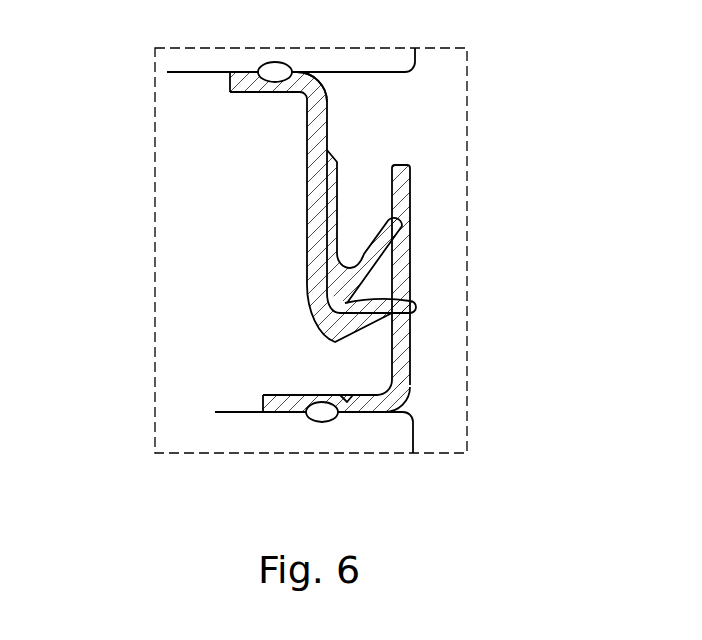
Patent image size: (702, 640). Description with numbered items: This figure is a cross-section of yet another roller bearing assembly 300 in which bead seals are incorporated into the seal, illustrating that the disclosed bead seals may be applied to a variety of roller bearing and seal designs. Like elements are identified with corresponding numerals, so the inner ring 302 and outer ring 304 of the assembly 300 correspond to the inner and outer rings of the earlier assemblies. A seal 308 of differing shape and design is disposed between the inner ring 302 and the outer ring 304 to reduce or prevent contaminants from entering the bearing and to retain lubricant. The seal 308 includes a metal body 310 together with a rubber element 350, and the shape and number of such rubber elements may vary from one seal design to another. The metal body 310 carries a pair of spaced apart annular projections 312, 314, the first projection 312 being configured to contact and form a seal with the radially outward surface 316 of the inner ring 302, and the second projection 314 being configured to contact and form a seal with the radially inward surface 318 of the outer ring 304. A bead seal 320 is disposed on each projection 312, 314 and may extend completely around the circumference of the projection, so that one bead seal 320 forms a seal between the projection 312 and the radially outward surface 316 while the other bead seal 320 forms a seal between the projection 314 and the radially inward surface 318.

The roller bearing assembly 300 is at (136, 182).
The inner ring 302 is at (365, 433).
The outer ring 304 is at (388, 57).
The seal 308 is at (450, 261).
The metal body 310 is at (413, 345).
The annular projection 312 is at (275, 407).
The annular projection 314 is at (230, 71).
The radially outward surface 316 is at (374, 416).
The radially inward surface 318 is at (298, 71).
The bead seal 320 is at (275, 72).
The rubber element 350 is at (403, 230).